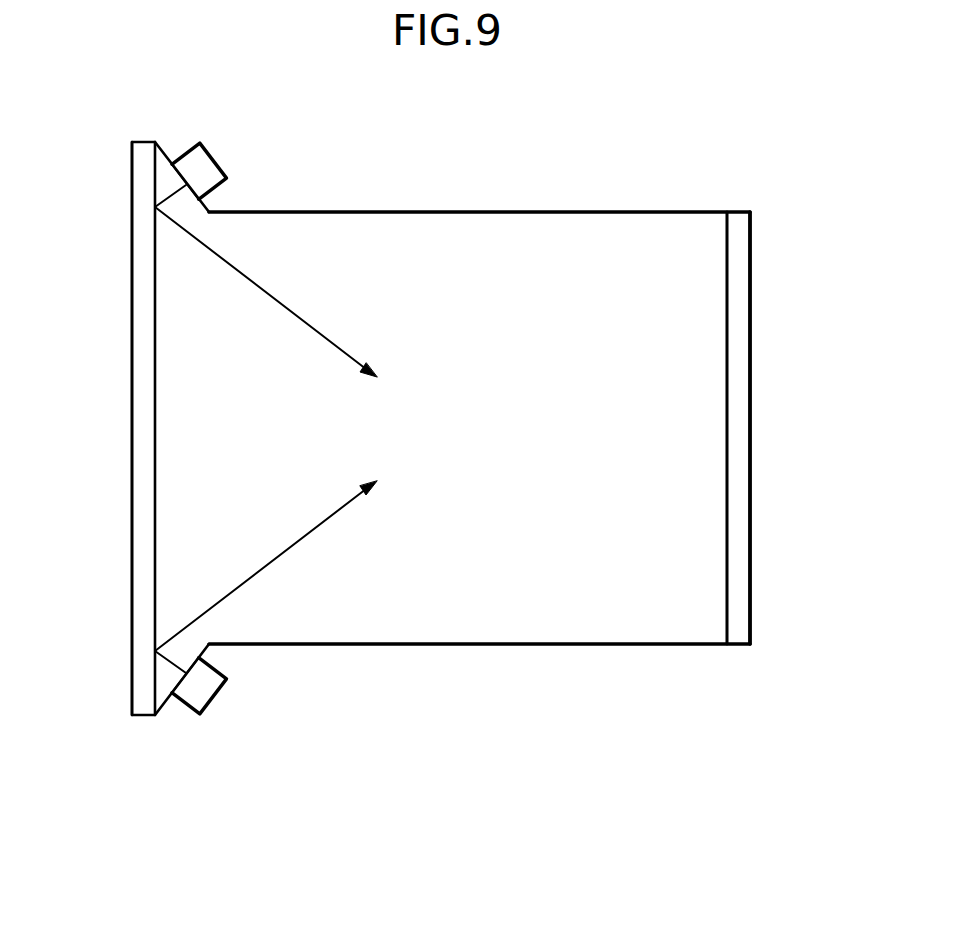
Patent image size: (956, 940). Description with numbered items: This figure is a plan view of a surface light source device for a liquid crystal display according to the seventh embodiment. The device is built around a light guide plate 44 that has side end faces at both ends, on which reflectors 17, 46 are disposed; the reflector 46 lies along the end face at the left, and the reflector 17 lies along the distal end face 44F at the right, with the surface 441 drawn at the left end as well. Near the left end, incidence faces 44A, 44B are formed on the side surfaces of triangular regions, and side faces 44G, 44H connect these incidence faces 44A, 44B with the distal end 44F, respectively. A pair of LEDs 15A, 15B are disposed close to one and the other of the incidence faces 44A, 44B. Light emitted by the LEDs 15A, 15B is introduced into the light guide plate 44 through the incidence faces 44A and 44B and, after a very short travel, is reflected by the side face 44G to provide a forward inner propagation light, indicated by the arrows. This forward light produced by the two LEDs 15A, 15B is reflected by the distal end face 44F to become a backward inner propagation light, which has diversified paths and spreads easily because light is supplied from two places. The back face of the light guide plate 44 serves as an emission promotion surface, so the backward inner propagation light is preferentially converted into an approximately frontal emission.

The LED 15A is at (207, 178).
The LED 15B is at (212, 688).
The reflector 17 is at (742, 368).
The light guide plate 44 is at (396, 238).
The incidence face 44A is at (163, 152).
The incidence face 44B is at (168, 710).
The distal end face 44F is at (728, 450).
The side face 44G is at (596, 212).
The side face 44H is at (652, 645).
The reflector 46 is at (143, 403).
The mounting surface 441 is at (143, 477).